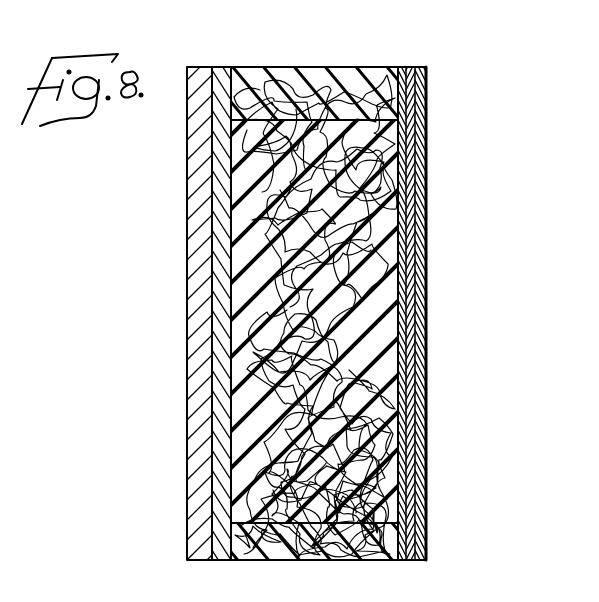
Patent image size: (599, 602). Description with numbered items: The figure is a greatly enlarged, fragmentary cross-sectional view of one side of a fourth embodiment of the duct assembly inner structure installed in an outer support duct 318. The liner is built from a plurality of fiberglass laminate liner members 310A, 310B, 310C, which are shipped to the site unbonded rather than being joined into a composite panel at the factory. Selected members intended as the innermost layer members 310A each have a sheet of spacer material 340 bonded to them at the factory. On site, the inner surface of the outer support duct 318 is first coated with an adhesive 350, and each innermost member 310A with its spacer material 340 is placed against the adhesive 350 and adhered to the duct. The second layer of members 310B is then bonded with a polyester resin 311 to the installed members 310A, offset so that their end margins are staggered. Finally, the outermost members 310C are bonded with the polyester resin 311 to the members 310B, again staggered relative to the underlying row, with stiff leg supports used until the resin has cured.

The polyester resin 311 is at (372, 71).
The innermost layer liner members 310A is at (416, 151).
The second layer liner members 310B is at (418, 192).
The outermost layer liner members 310C is at (422, 232).
The outer support duct 318 is at (186, 262).
The spacer material 340 is at (262, 403).
The adhesive 350 is at (222, 201).